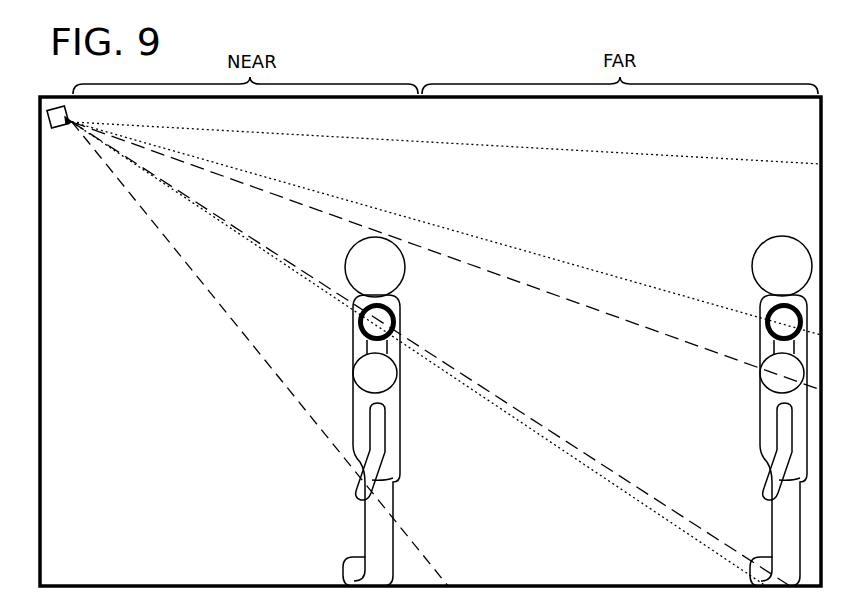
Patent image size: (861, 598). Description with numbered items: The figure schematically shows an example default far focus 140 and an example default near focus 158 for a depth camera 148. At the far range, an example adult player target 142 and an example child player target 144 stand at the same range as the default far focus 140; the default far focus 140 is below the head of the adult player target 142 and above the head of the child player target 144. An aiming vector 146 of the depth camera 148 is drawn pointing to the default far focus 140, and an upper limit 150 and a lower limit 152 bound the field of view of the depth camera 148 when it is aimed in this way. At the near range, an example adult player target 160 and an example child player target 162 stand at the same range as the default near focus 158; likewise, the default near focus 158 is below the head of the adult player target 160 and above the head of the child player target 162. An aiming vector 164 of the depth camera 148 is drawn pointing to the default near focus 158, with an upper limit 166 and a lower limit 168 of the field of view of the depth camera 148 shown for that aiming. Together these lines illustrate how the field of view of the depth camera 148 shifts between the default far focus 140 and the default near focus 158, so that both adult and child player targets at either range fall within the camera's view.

The depth camera 148 is at (54, 129).
The upper limit 150 is at (645, 155).
The aiming vector 146 is at (608, 277).
The upper limit 166 is at (312, 207).
The aiming vector 164 is at (272, 252).
The lower limit 152 is at (648, 506).
The lower limit 168 is at (222, 305).
The adult player target 160 is at (404, 280).
The default near focus 158 is at (397, 317).
The child player target 162 is at (394, 364).
The adult player target 142 is at (762, 244).
The default far focus 140 is at (769, 310).
The child player target 144 is at (766, 358).